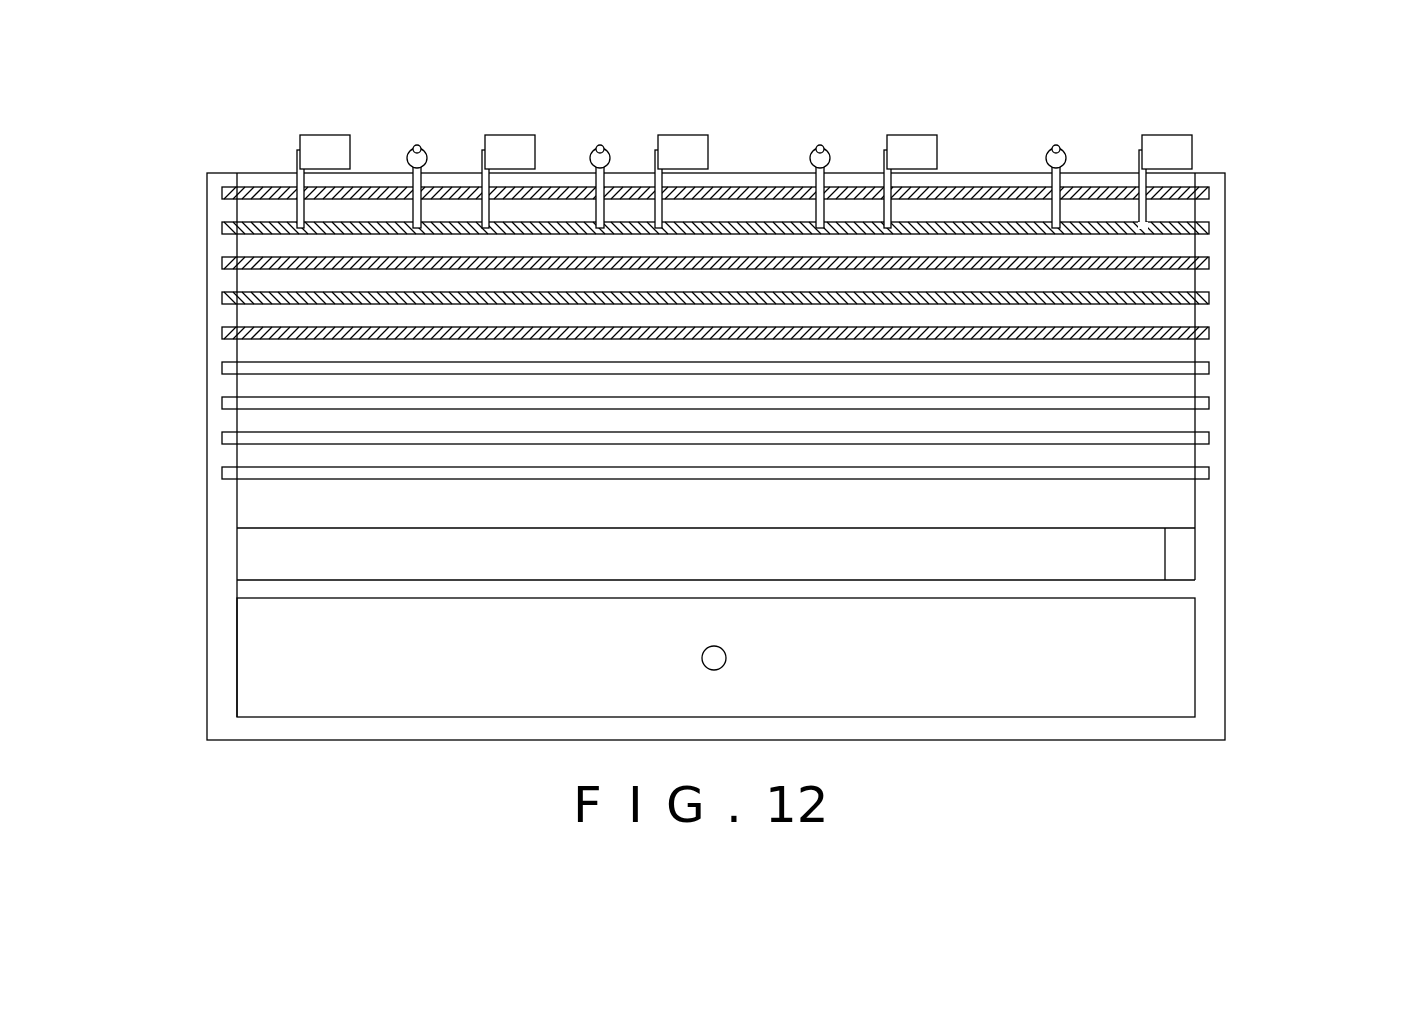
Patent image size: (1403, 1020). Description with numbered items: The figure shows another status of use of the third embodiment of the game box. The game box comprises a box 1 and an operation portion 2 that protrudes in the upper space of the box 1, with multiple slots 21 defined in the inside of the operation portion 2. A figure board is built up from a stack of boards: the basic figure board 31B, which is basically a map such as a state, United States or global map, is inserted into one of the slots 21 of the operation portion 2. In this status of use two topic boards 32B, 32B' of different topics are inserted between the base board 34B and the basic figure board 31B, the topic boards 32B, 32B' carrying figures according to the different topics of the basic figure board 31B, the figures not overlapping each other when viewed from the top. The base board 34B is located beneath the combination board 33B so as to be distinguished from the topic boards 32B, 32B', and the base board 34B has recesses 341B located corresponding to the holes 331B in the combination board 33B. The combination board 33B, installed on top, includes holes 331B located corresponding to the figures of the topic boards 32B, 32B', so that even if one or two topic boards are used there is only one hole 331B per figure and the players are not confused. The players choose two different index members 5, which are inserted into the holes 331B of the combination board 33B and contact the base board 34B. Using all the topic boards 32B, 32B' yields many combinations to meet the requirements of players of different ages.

The box 1 is at (1225, 712).
The operation portion 2 is at (1217, 517).
The slots 21 is at (1208, 470).
The basic figure board 31B is at (1205, 337).
The topic board 32B is at (770, 330).
The topic board 32B' is at (787, 328).
The combination board 33B is at (1210, 190).
The holes 331B is at (1155, 185).
The base board 34B is at (1210, 226).
The recesses 341B is at (1162, 232).
The index member 5 is at (330, 147).